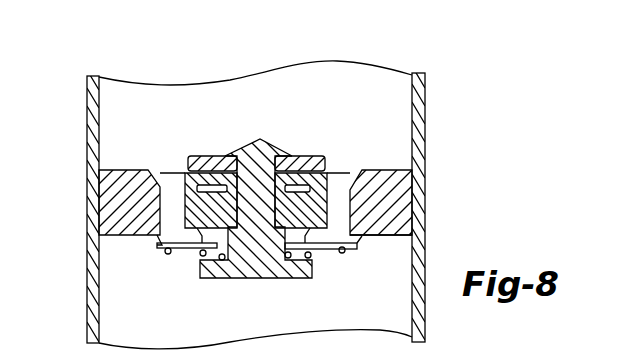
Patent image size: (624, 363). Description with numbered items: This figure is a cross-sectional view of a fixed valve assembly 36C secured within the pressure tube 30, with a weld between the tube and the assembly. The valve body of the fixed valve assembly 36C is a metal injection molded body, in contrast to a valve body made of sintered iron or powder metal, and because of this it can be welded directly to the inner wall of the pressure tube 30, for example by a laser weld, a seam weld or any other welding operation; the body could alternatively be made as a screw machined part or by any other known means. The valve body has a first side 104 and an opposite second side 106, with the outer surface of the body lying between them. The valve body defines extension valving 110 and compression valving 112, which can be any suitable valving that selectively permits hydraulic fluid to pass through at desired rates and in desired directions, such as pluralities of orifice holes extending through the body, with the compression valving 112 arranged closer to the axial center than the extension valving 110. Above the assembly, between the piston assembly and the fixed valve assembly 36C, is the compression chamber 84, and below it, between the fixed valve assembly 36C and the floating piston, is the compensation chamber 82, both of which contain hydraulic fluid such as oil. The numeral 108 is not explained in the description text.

The pressure tube 30 is at (93, 78).
The compression chamber 84 is at (127, 132).
The compensation chamber 82 is at (140, 278).
The fixed valve assembly 36C is at (265, 137).
The compression valving 112 is at (298, 188).
The first side 104 is at (383, 170).
The housing side wall 108 is at (412, 203).
The extension valving 110 is at (337, 207).
The second side 106 is at (392, 237).